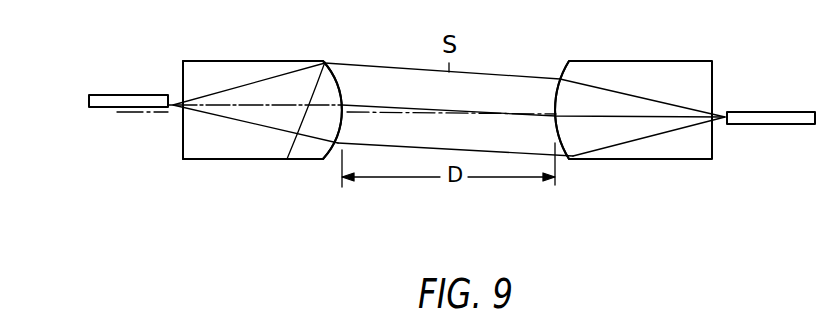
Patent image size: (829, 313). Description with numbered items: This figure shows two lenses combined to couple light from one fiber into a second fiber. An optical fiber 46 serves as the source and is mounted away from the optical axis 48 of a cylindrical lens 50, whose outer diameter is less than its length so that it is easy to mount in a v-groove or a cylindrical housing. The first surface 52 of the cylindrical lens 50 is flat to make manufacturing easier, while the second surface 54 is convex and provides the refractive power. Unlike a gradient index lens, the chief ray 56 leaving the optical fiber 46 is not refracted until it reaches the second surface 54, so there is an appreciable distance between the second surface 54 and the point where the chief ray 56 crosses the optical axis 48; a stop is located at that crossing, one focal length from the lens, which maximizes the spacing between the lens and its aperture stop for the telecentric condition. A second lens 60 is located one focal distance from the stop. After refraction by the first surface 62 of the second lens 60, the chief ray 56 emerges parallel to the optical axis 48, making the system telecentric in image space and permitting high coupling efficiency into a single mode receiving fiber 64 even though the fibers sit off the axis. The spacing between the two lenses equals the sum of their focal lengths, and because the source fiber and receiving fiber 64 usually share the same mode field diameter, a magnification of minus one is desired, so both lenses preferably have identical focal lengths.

The optical fiber 46 is at (116, 98).
The optical axis 48 is at (132, 114).
The cylindrical lens 50 is at (252, 65).
The first surface 52 is at (183, 72).
The second surface 54 is at (333, 76).
The chief ray 56 is at (293, 157).
The second lens 60 is at (662, 72).
The first surface of the second lens 62 is at (559, 69).
The receiving fiber 64 is at (792, 125).